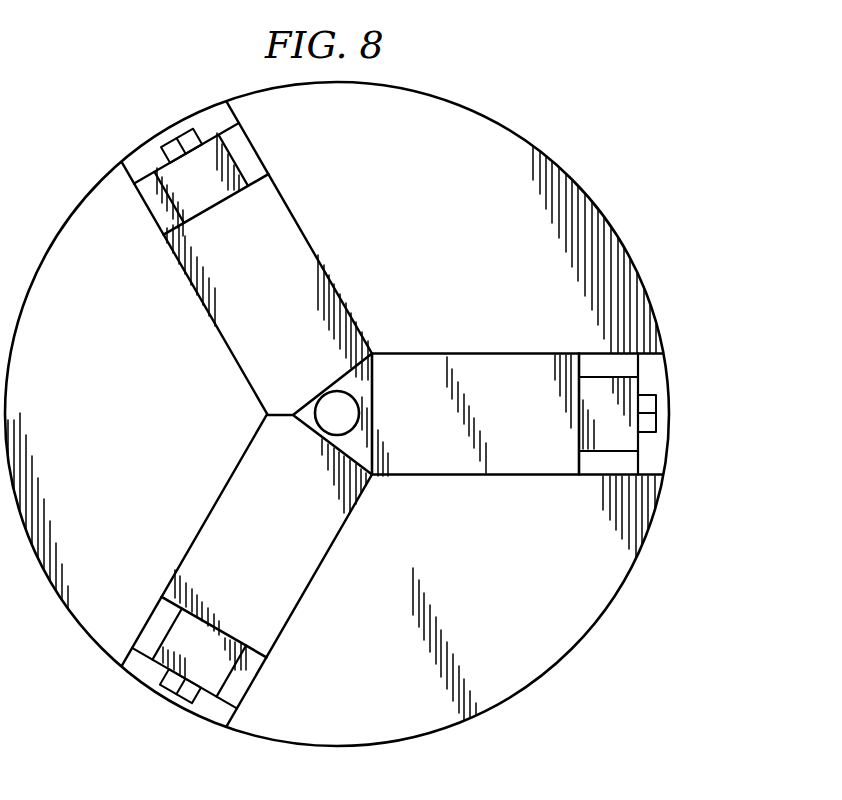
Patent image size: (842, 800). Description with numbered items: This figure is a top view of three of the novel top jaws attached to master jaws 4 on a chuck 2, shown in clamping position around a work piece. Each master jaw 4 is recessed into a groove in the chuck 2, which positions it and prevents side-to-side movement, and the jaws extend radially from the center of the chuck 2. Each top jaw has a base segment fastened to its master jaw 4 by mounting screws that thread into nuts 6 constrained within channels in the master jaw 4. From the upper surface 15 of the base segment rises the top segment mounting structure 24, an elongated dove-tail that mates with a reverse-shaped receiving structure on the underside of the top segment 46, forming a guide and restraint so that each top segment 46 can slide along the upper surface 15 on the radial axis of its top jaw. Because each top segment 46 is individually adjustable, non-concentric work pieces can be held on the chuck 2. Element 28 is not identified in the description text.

The chuck 2 is at (530, 652).
The master jaw 4 is at (133, 158).
The nut 6 is at (327, 405).
The upper surface 15 is at (243, 147).
The top segment mounting structure 24 is at (212, 183).
The end block 28 is at (180, 132).
The top segment 46 is at (320, 335).